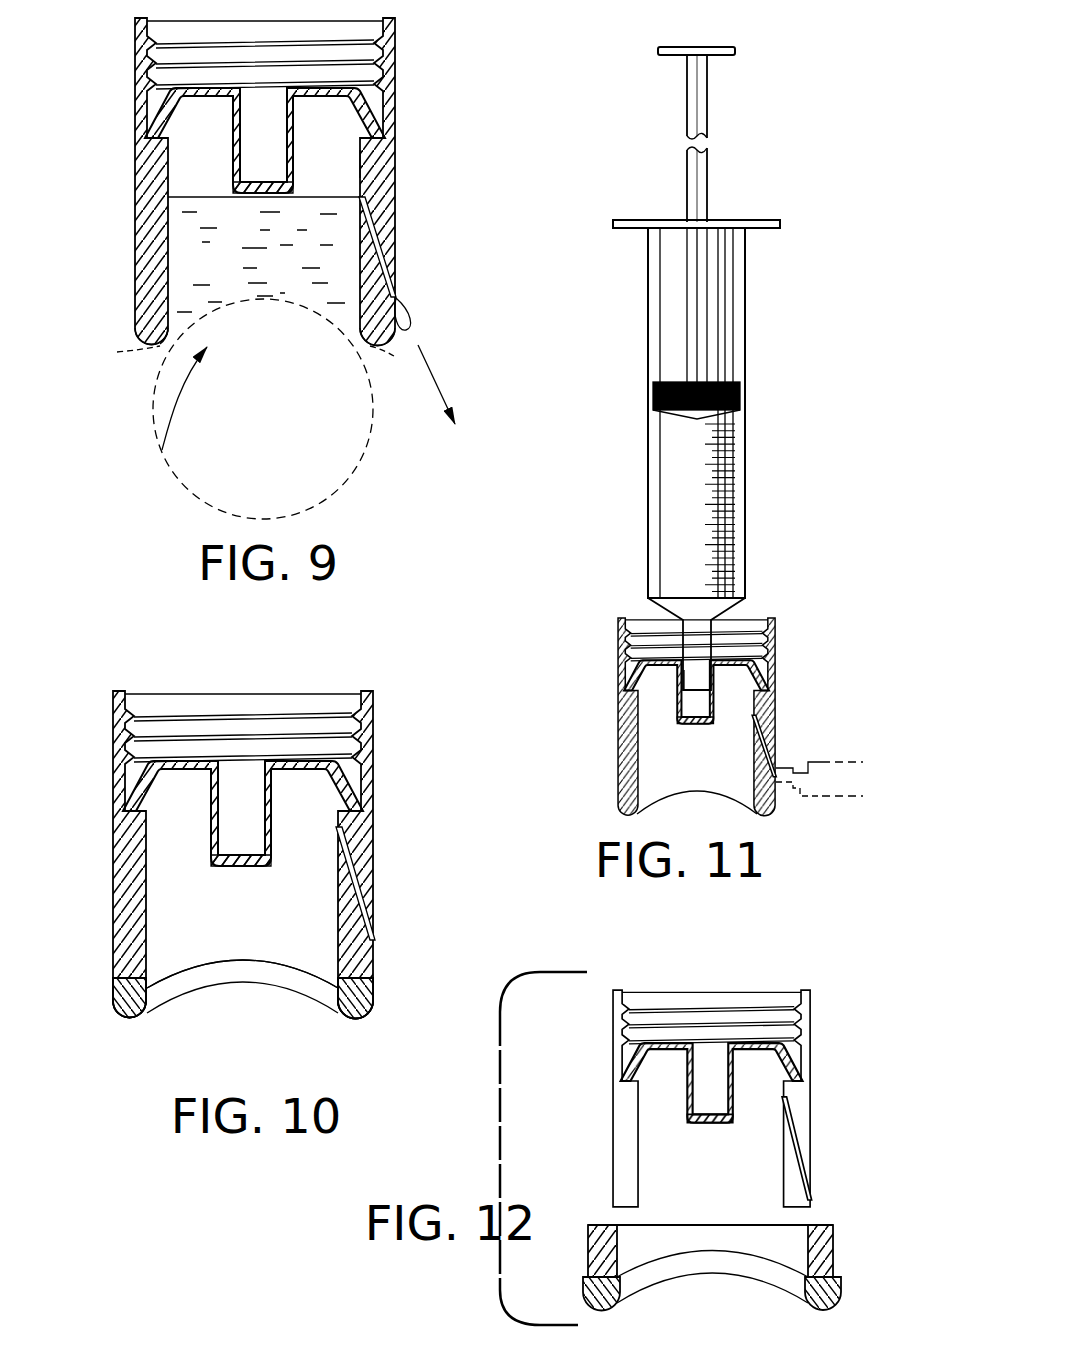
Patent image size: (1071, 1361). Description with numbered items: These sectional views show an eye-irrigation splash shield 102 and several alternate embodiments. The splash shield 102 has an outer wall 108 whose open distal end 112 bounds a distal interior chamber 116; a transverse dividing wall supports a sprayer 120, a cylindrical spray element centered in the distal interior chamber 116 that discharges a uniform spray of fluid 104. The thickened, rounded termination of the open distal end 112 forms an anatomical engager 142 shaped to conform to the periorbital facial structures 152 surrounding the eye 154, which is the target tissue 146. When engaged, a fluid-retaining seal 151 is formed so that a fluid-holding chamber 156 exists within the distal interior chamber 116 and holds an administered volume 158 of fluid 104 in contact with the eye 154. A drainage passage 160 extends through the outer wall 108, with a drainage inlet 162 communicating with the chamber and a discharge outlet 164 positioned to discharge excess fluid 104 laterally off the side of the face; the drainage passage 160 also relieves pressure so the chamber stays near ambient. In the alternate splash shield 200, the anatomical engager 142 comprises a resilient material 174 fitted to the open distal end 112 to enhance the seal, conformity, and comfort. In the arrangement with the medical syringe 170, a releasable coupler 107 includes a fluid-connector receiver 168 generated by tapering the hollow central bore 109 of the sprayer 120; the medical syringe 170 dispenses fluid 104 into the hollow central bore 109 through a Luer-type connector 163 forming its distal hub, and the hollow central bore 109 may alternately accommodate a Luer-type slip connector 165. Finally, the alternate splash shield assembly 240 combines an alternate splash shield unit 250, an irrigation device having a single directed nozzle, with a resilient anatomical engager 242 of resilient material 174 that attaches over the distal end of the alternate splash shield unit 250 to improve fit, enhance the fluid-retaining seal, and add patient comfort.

In FIG. 9, the splash shield 102 is at (308, 219).
In FIG. 11, the splash shield 102 is at (710, 727).
In FIG. 9, the fluid 104 is at (180, 196).
In FIG. 11, the fluid 104 is at (675, 495).
In FIG. 11, the releasable coupler 107 is at (710, 443).
In FIG. 9, the outer wall 108 is at (135, 148).
In FIG. 10, the outer wall 108 is at (113, 900).
In FIG. 11, the hollow central bore 109 is at (704, 700).
In FIG. 9, the open distal end 112 is at (132, 328).
In FIG. 10, the open distal end 112 is at (183, 990).
In FIG. 9, the distal interior chamber 116 is at (265, 131).
In FIG. 10, the distal interior chamber 116 is at (190, 958).
In FIG. 9, the sprayer 120 is at (232, 143).
In FIG. 10, the sprayer 120 is at (272, 832).
In FIG. 11, the sprayer 120 is at (688, 723).
In FIG. 9, the anatomical engager 142 is at (360, 346).
In FIG. 10, the anatomical engager 142 is at (137, 1020).
In FIG. 9, the target tissue 146 is at (162, 450).
In FIG. 9, the fluid-retaining seal 151 is at (170, 348).
In FIG. 9, the periorbital facial structures 152 is at (128, 346).
In FIG. 9, the eye 154 is at (356, 466).
In FIG. 9, the fluid-holding chamber 156 is at (318, 126).
In FIG. 9, the administered volume 158 is at (195, 258).
In FIG. 9, the drainage passage 160 is at (407, 182).
In FIG. 9, the drainage inlet 162 is at (355, 182).
In FIG. 11, the Luer-type connector 163 is at (686, 678).
In FIG. 9, the discharge outlet 164 is at (394, 270).
In FIG. 11, the discharge outlet 164 is at (779, 766).
In FIG. 11, the Luer-type slip connector 165 is at (665, 650).
In FIG. 11, the fluid-connector receiver 168 is at (746, 612).
In FIG. 11, the medical syringe 170 is at (745, 432).
In FIG. 10, the resilient material 174 is at (298, 988).
In FIG. 12, the resilient material 174 is at (682, 1273).
In FIG. 10, the alternate splash shield 200 is at (266, 861).
In FIG. 12, the alternate splash shield assembly 240 is at (701, 1123).
In FIG. 12, the resilient anatomical engager 242 is at (742, 1271).
In FIG. 12, the alternate splash shield unit 250 is at (811, 1058).